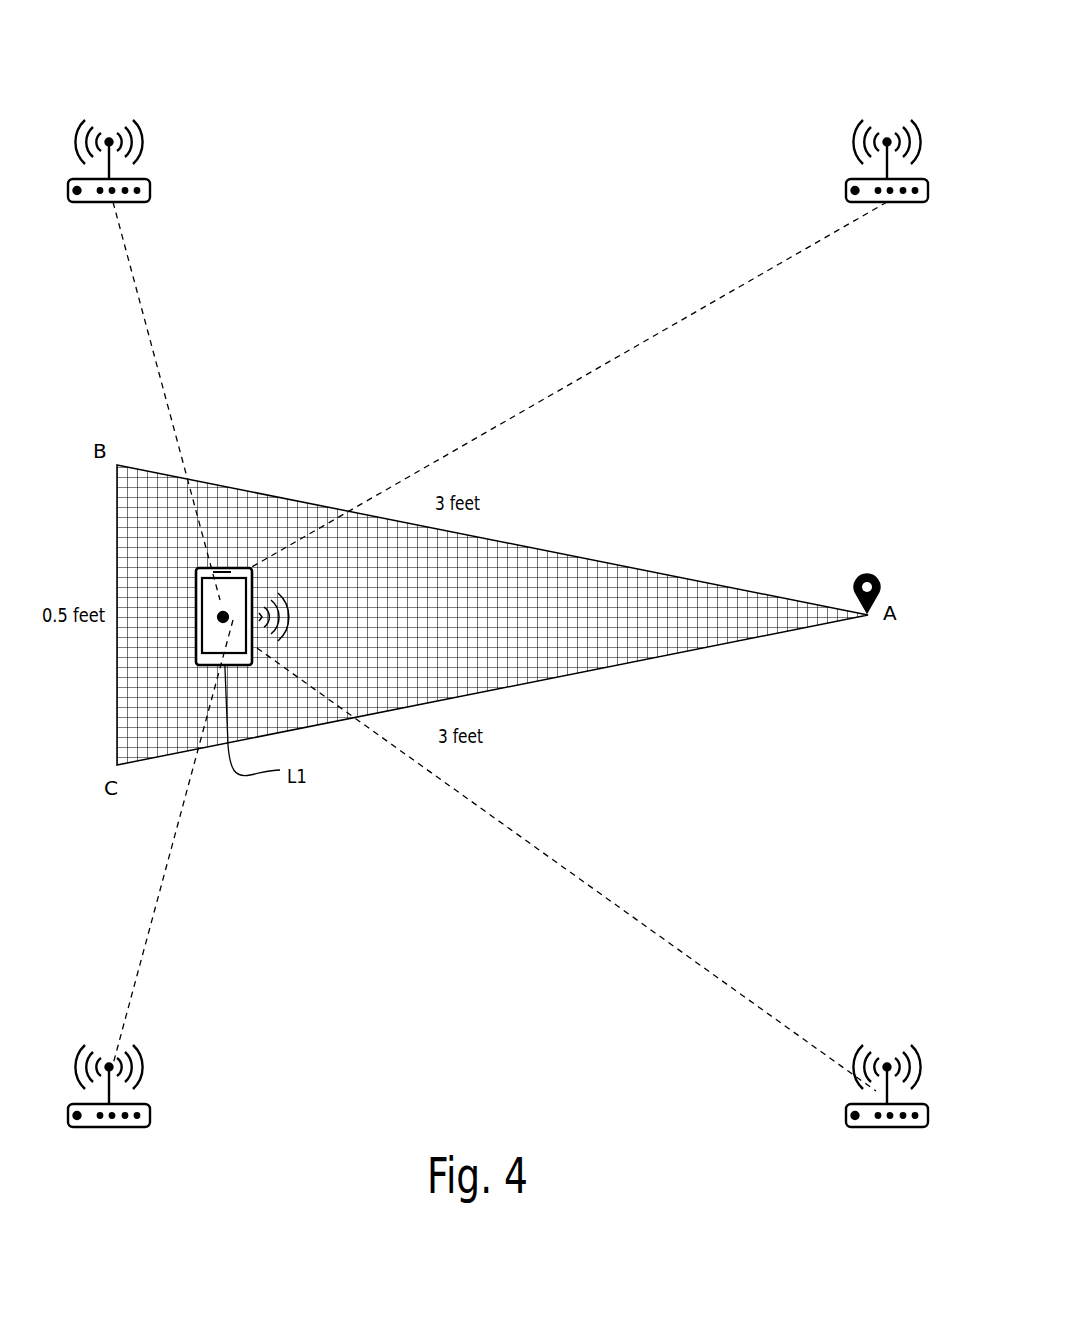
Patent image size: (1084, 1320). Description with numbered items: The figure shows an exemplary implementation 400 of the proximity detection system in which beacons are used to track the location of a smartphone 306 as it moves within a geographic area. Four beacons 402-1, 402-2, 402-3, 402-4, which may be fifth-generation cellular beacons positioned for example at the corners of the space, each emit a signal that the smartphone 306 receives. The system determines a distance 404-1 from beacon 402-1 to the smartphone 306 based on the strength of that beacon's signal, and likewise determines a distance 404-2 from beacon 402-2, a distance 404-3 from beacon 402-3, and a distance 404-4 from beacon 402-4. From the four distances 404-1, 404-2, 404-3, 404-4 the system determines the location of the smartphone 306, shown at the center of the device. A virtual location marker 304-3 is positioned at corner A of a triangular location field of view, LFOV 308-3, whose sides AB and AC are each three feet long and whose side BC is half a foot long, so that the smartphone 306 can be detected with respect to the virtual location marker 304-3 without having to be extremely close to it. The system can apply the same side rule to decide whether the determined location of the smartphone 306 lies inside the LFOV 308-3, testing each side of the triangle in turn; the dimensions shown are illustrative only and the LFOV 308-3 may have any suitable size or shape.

The exemplary implementation 400 is at (228, 94).
The smartphone 306 is at (232, 568).
The virtual location marker 304-3 is at (867, 575).
The LFOV 308-3 is at (507, 542).
The beacon 402-1 is at (127, 202).
The beacon 402-2 is at (848, 190).
The beacon 402-3 is at (110, 1127).
The beacon 402-4 is at (882, 1127).
The distance 404-1 is at (152, 340).
The distance 404-2 is at (660, 332).
The distance 404-3 is at (165, 870).
The distance 404-4 is at (608, 898).